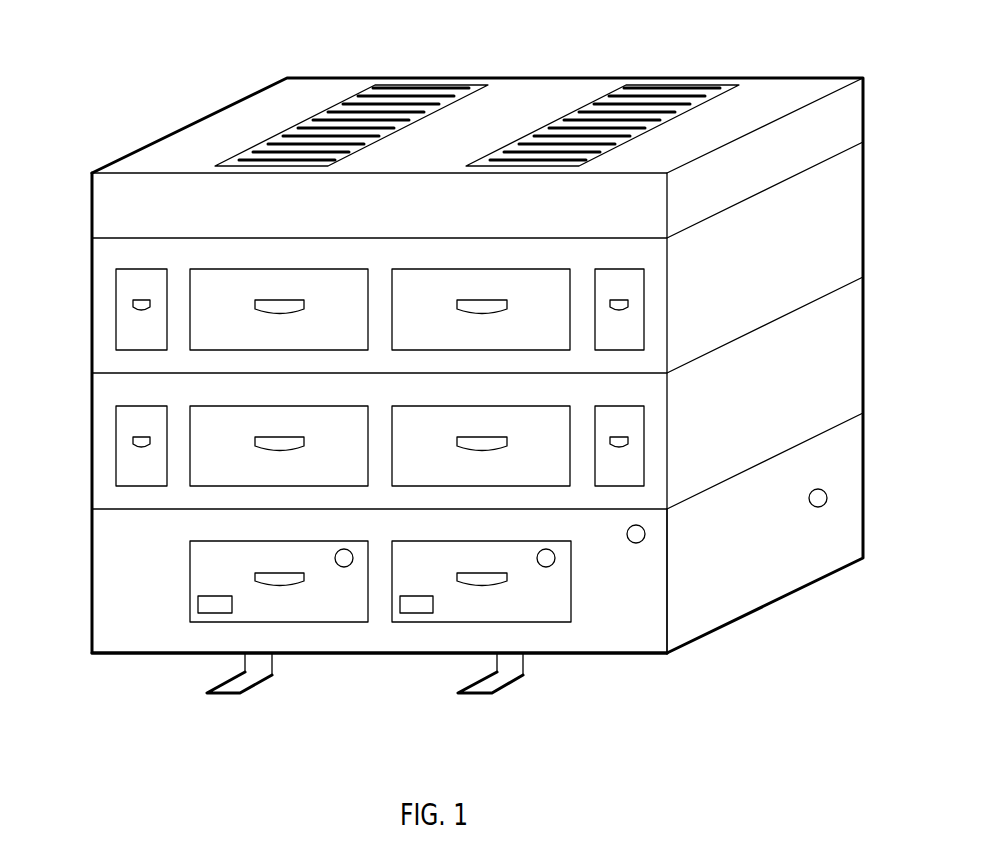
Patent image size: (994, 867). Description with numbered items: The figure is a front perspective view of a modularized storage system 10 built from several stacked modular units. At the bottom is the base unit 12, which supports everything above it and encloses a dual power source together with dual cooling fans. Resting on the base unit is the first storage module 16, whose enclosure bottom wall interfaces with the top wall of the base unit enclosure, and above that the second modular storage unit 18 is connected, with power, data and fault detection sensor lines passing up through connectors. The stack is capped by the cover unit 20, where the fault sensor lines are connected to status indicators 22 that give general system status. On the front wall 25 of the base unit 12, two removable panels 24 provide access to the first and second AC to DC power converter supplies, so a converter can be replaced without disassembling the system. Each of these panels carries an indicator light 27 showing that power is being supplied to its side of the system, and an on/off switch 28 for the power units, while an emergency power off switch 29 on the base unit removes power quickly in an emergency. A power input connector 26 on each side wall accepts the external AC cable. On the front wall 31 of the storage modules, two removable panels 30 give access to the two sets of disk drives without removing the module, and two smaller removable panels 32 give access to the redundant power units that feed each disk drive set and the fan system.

The storage system 10 is at (162, 78).
The base unit 12 is at (845, 467).
The first storage module 16 is at (845, 362).
The second modular storage unit 18 is at (845, 222).
The cover unit 20 is at (845, 130).
The status indicators 22 is at (433, 85).
The removable panels 24 is at (243, 622).
The front wall 25 is at (642, 635).
The power input connector 26 is at (813, 507).
The indicator light 27 is at (344, 567).
The on/off switch 28 is at (203, 614).
The emergency power off switch 29 is at (636, 543).
The removable panels 30 is at (300, 268).
The front wall 31 is at (107, 362).
The smaller removable panels 32 is at (137, 268).